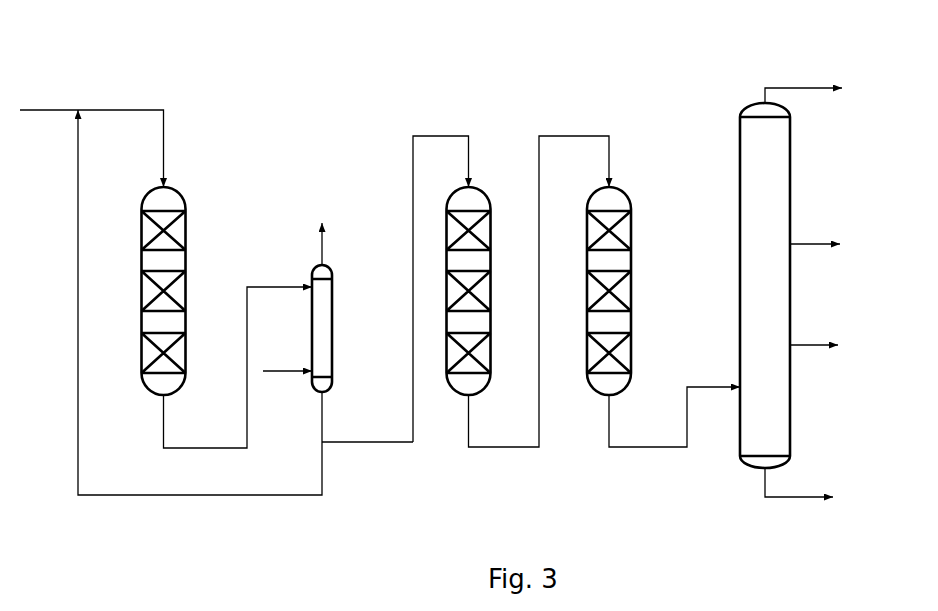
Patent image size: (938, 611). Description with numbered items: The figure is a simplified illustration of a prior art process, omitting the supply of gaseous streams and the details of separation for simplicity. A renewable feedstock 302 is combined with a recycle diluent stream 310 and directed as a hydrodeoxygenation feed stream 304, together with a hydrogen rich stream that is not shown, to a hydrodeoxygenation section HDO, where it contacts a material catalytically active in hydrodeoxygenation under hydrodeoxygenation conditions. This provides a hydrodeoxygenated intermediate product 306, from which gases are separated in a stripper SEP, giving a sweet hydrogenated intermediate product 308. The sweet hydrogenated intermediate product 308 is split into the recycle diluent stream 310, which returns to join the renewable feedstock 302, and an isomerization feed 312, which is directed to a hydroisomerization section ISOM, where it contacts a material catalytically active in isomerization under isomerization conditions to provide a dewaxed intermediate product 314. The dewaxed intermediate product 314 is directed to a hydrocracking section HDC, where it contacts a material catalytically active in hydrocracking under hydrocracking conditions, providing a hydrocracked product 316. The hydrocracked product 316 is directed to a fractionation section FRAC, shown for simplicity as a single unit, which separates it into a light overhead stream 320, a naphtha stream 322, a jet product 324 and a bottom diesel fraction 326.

The renewable feedstock 302 is at (44, 110).
The hydrodeoxygenation feed stream 304 is at (128, 110).
The hydrodeoxygenated intermediate product 306 is at (247, 352).
The sweet hydrogenated intermediate product 308 is at (322, 430).
The recycle diluent stream 310 is at (103, 497).
The isomerization feed 312 is at (411, 372).
The dewaxed intermediate product 314 is at (469, 432).
The hydrocracked product 316 is at (609, 432).
The light overhead stream 320 is at (820, 86).
The naphtha stream 322 is at (820, 243).
The jet product 324 is at (820, 343).
The bottom diesel fraction 326 is at (820, 495).
The hydrodeoxygenation section HDO is at (168, 188).
The stripper SEP is at (332, 302).
The hydroisomerization section ISOM is at (481, 189).
The hydrocracking section HDC is at (622, 189).
The fractionation section FRAC is at (790, 190).